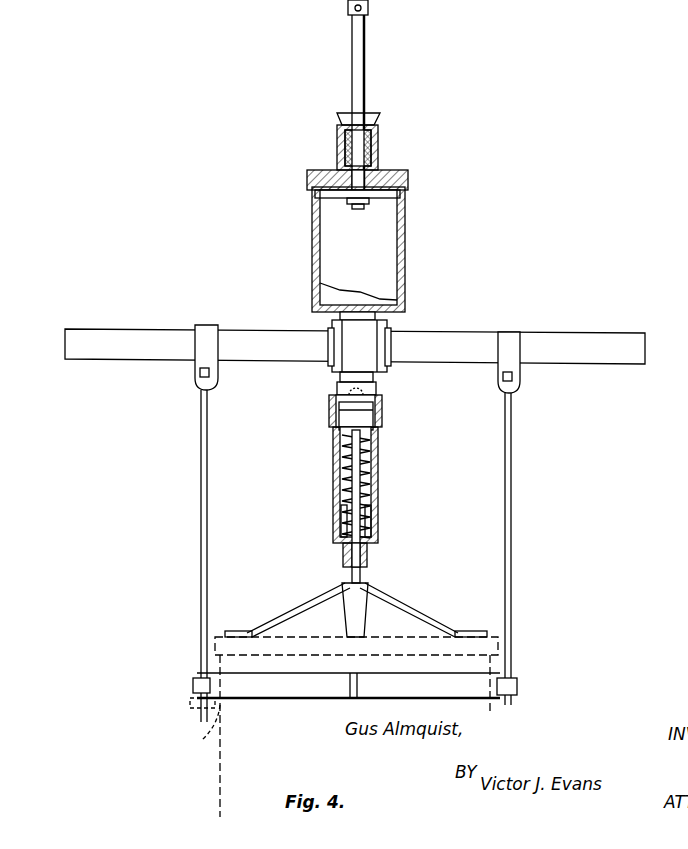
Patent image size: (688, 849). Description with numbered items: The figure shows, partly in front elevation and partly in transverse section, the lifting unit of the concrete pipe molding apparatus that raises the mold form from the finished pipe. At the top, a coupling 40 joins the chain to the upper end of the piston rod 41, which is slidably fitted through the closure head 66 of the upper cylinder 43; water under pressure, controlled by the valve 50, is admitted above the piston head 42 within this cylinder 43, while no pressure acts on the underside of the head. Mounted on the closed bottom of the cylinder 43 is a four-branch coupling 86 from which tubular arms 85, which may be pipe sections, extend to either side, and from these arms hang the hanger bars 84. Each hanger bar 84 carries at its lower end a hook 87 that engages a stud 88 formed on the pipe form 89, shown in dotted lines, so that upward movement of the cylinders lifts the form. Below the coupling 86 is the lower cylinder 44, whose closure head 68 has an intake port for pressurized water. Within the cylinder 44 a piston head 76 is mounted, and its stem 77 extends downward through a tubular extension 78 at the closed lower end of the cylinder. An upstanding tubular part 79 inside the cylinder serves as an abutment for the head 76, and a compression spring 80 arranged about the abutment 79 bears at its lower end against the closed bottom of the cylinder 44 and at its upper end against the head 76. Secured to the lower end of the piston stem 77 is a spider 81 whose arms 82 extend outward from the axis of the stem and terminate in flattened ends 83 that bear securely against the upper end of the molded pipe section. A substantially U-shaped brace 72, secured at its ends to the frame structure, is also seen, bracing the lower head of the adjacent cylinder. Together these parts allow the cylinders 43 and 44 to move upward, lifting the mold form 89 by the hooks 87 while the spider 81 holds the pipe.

The coupling 40 is at (350, 8).
The valve 50 is at (340, 2).
The piston rod 41 is at (366, 72).
The piston head 42 is at (337, 165).
The closure head 66 is at (385, 178).
The cylinder 43 is at (404, 248).
The tubular arms 85 is at (470, 345).
The four-branch coupling 86 is at (375, 343).
The hanger bars 84 is at (513, 488).
The closure head 68 is at (382, 398).
The piston head 76 is at (345, 418).
The cylinder 44 is at (380, 470).
The compression spring 80 is at (372, 496).
The tubular part 79 is at (341, 519).
The piston stem 77 is at (362, 556).
The tubular extension 78 is at (343, 560).
The spider 81 is at (350, 595).
The arms 82 is at (360, 620).
The flattened ends 83 is at (240, 628).
The pipe form 89 is at (490, 670).
The brace 72 is at (360, 689).
The hook 87 is at (200, 722).
The studs 88 is at (201, 735).